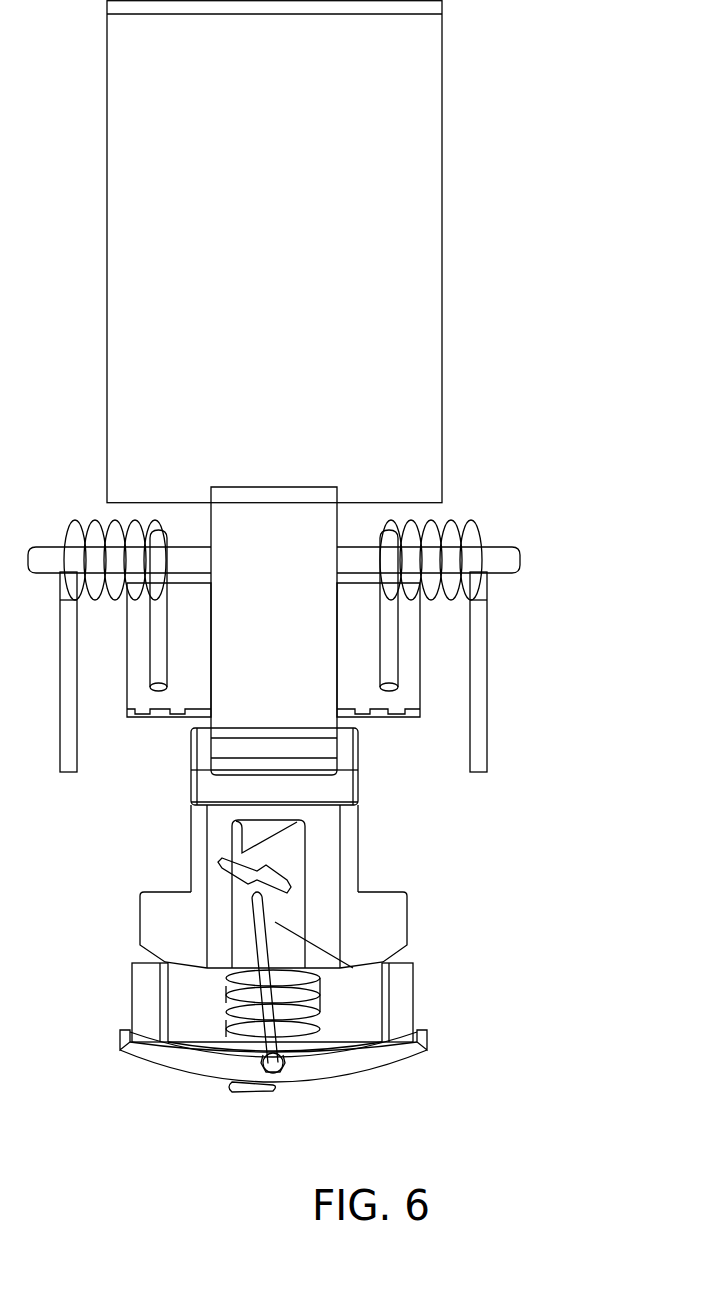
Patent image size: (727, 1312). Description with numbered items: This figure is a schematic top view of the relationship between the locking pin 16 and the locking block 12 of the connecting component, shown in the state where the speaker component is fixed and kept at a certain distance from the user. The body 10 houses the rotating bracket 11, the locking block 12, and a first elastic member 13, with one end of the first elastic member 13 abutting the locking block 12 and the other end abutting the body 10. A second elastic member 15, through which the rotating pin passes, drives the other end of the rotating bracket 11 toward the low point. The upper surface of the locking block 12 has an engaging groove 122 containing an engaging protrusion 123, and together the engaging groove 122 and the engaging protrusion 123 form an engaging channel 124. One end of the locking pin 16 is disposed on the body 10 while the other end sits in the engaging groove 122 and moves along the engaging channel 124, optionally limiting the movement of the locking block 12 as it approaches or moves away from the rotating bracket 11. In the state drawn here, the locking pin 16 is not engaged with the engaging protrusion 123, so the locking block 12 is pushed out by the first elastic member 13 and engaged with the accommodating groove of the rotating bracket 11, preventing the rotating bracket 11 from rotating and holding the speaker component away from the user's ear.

The body 10 is at (398, 1050).
The rotating bracket 11 is at (403, 295).
The locking block 12 is at (372, 930).
The first elastic member 13 is at (318, 1014).
The second elastic member 15 is at (480, 525).
The locking pin 16 is at (257, 943).
The engaging groove 122 is at (220, 883).
The engaging protrusion 123 is at (285, 877).
The engaging channel 124 is at (230, 842).